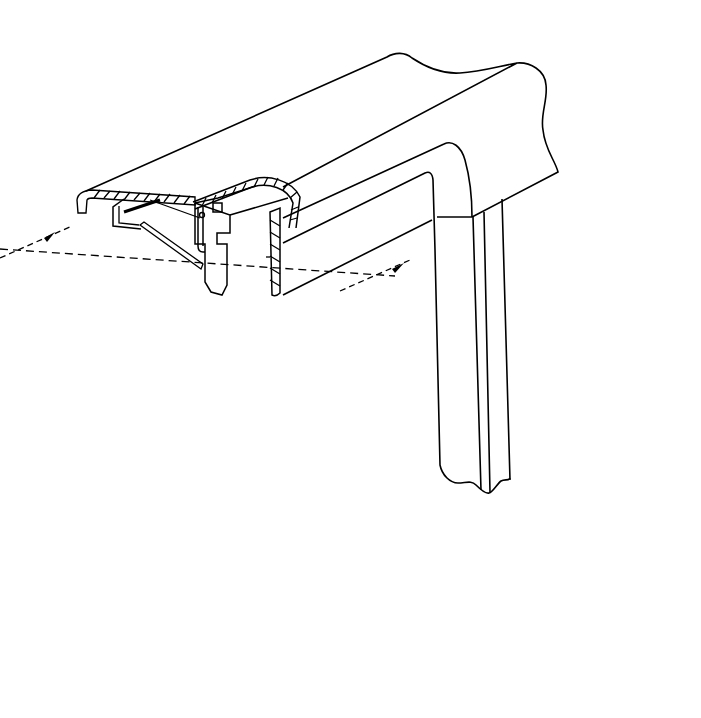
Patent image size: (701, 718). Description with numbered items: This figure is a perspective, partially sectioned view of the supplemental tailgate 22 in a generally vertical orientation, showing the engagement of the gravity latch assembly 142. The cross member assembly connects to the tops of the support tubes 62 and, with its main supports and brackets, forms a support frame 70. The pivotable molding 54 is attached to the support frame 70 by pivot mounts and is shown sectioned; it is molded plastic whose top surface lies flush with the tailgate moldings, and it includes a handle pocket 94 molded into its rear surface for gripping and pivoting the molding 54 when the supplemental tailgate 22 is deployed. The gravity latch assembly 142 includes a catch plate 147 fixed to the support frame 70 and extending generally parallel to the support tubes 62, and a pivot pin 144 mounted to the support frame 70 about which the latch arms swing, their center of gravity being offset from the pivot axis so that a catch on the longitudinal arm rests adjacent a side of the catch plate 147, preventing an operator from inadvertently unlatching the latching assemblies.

The supplemental tailgate 22 is at (193, 113).
The pivotable molding 54 is at (310, 90).
The support tubes 62 is at (437, 347).
The handle pocket 94 is at (432, 198).
The gravity latch assembly 142 is at (239, 281).
The pivot pin 144 is at (216, 191).
The catch plate 147 is at (200, 277).
The support frame 70 is at (120, 254).